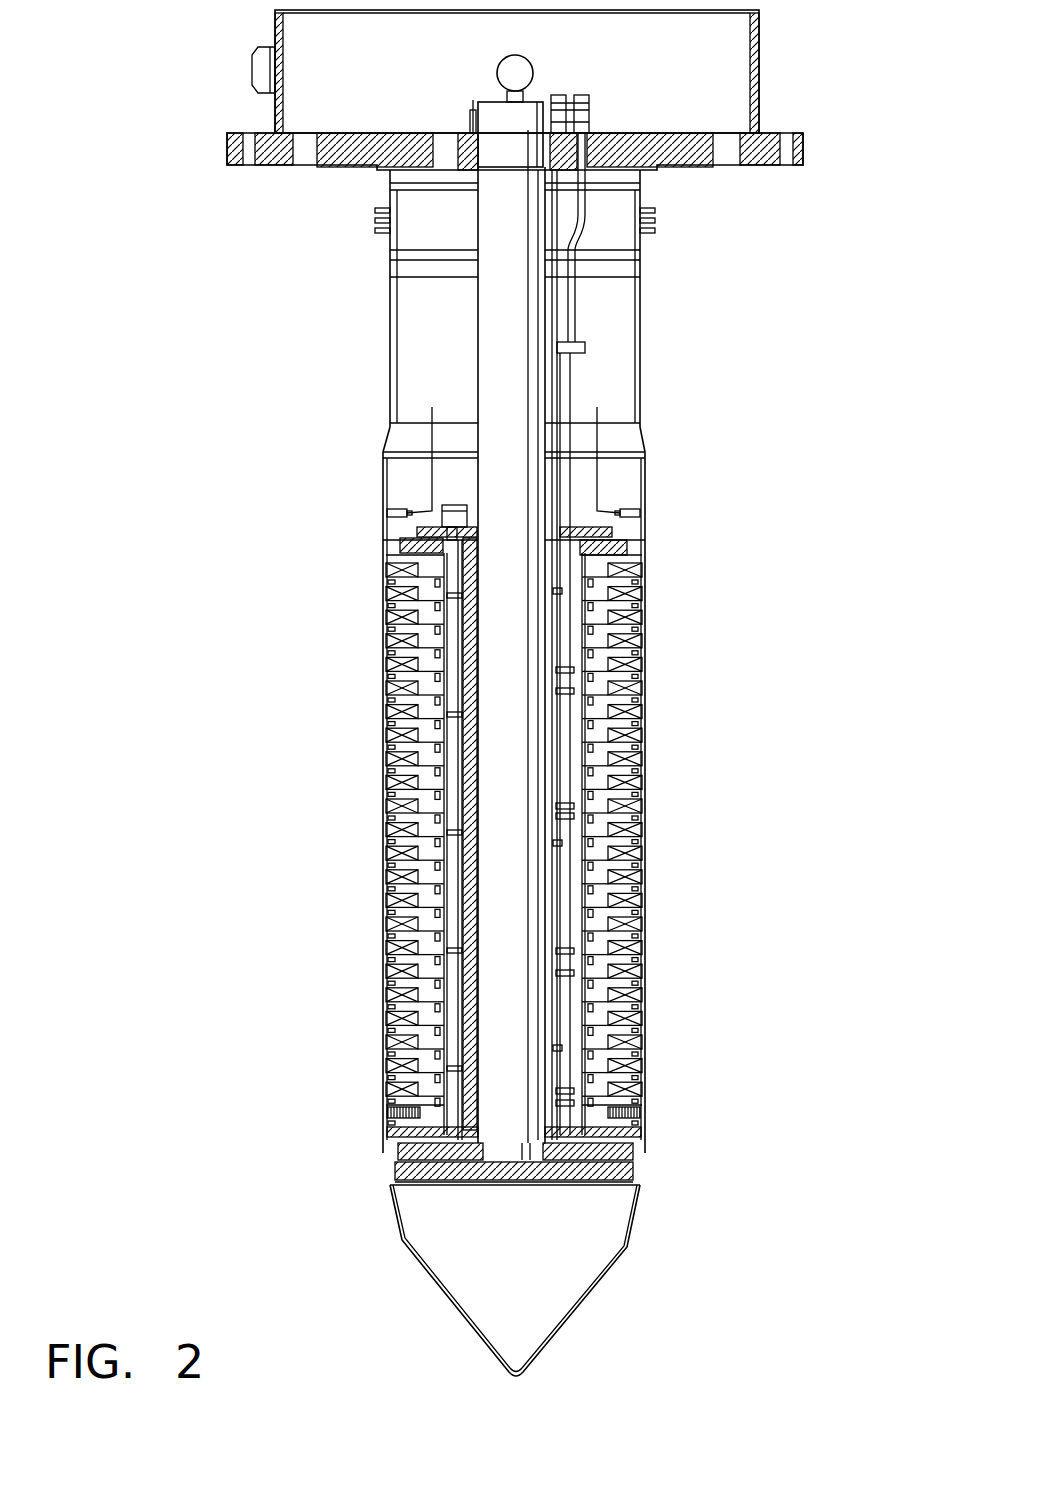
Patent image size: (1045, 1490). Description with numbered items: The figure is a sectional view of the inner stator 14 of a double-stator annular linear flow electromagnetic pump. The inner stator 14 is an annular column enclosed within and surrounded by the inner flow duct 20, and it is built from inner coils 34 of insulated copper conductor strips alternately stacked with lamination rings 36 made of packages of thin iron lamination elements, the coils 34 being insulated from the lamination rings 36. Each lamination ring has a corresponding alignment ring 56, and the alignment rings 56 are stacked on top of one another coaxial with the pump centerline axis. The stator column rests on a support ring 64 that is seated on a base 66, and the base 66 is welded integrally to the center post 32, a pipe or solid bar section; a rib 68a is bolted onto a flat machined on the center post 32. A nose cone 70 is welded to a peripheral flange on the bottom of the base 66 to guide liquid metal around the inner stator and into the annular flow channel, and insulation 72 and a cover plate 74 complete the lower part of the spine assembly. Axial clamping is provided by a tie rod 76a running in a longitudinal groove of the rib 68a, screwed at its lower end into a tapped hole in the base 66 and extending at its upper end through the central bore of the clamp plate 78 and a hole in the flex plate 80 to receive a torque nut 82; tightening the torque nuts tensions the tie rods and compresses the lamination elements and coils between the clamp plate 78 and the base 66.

The inner stator 14 is at (670, 612).
The inner flow duct 20 is at (385, 643).
The center post 32 is at (518, 727).
The inner coils 34 is at (385, 1017).
The lamination rings 36 is at (393, 1083).
The alignment ring 56 is at (445, 935).
The support ring 64 is at (640, 1133).
The base 66 is at (637, 1160).
The rib 68a is at (473, 575).
The nose cone 70 is at (610, 1273).
The insulation 72 is at (570, 1185).
The cover plate 74 is at (543, 1187).
The tie rod 76a is at (455, 605).
The clamp plate 78 is at (633, 543).
The flex plate 80 is at (612, 532).
The torque nut 82 is at (468, 517).